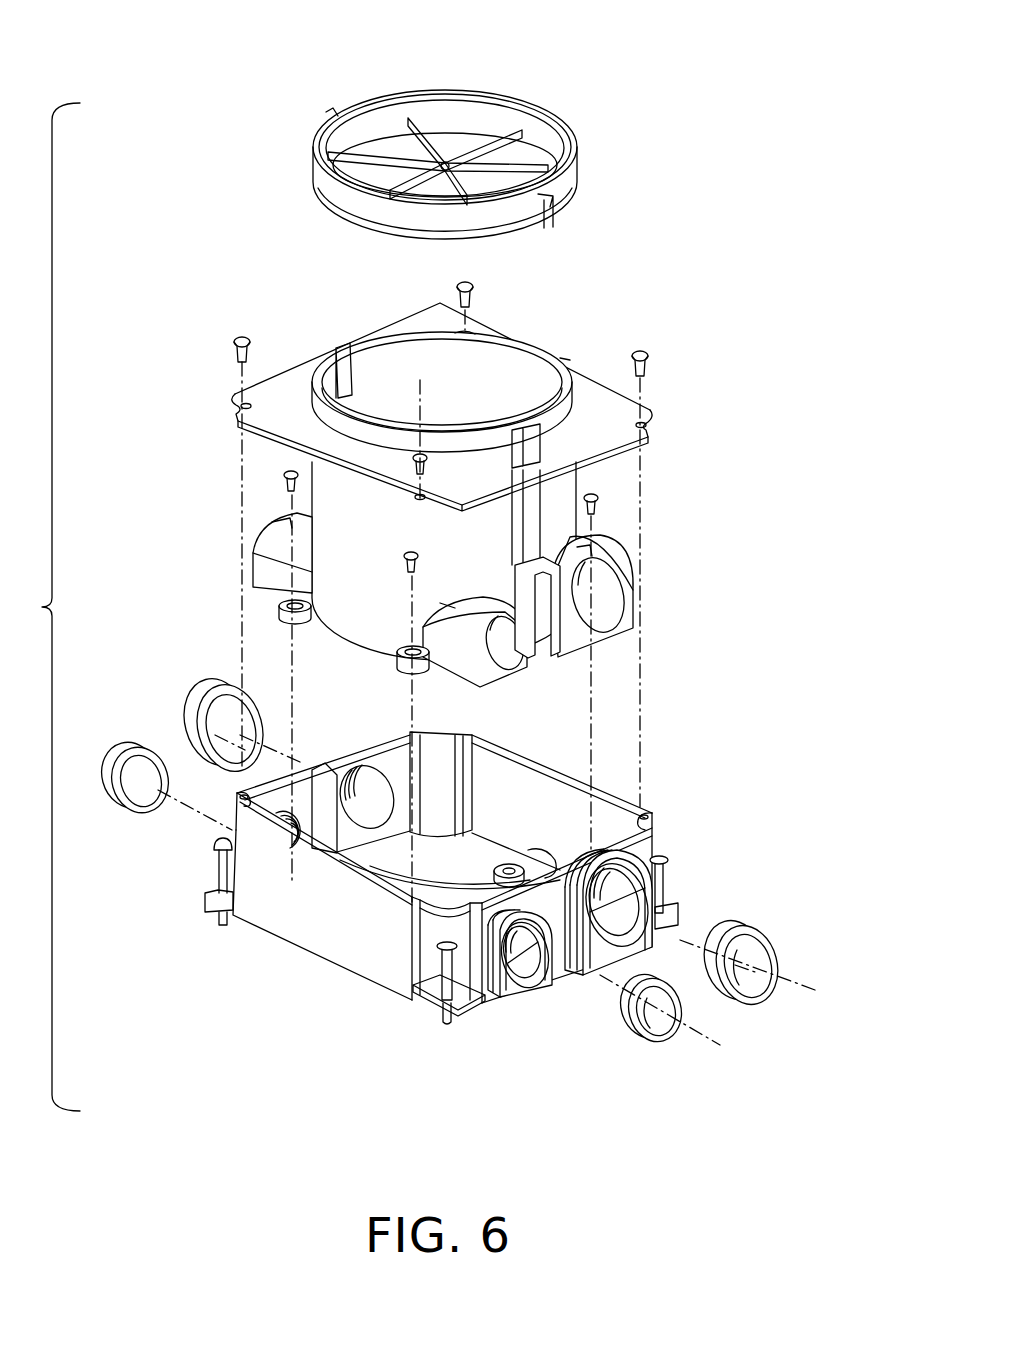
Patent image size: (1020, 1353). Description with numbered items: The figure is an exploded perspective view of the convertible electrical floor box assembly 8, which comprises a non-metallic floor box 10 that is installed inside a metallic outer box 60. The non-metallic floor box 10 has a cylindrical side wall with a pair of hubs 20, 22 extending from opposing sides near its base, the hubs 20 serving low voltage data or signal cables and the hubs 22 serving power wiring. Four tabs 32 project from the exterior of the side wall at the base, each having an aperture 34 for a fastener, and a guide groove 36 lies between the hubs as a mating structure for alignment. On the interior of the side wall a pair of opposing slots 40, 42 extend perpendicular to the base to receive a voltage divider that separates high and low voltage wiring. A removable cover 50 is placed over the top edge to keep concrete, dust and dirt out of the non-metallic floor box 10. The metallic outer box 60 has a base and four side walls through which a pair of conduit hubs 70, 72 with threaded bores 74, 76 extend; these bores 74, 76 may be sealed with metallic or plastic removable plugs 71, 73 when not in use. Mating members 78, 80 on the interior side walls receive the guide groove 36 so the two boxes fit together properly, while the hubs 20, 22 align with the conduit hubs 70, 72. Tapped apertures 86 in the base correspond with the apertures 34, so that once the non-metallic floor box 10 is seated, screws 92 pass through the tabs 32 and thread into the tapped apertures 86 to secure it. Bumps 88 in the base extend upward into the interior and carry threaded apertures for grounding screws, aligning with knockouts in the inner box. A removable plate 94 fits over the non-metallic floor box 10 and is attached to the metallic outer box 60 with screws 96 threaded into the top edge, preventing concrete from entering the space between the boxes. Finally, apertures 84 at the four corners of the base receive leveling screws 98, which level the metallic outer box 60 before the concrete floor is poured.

The convertible electrical floor box assembly 8 is at (43, 607).
The non-metallic floor box 10 is at (655, 490).
The hub 20 is at (466, 666).
The hub 22 is at (613, 637).
The tab 32 is at (275, 626).
The aperture 34 is at (297, 603).
The guide groove 36 is at (550, 657).
The slot 40 is at (530, 427).
The slot 42 is at (347, 403).
The cover 50 is at (508, 98).
The metallic outer box 60 is at (698, 863).
The conduit hub 70 is at (508, 1010).
The plug 71 is at (150, 748).
The conduit hub 72 is at (643, 938).
The plug 73 is at (210, 693).
The threaded bore 74 is at (535, 990).
The threaded bore 76 is at (626, 880).
The member 78 is at (535, 855).
The member 80 is at (327, 770).
The aperture 84 is at (418, 990).
The tapped aperture 86 is at (470, 842).
The bump 88 is at (497, 880).
The screw 92 is at (290, 472).
The removable plate 94 is at (305, 378).
The screw 96 is at (470, 283).
The leveling screw 98 is at (226, 838).